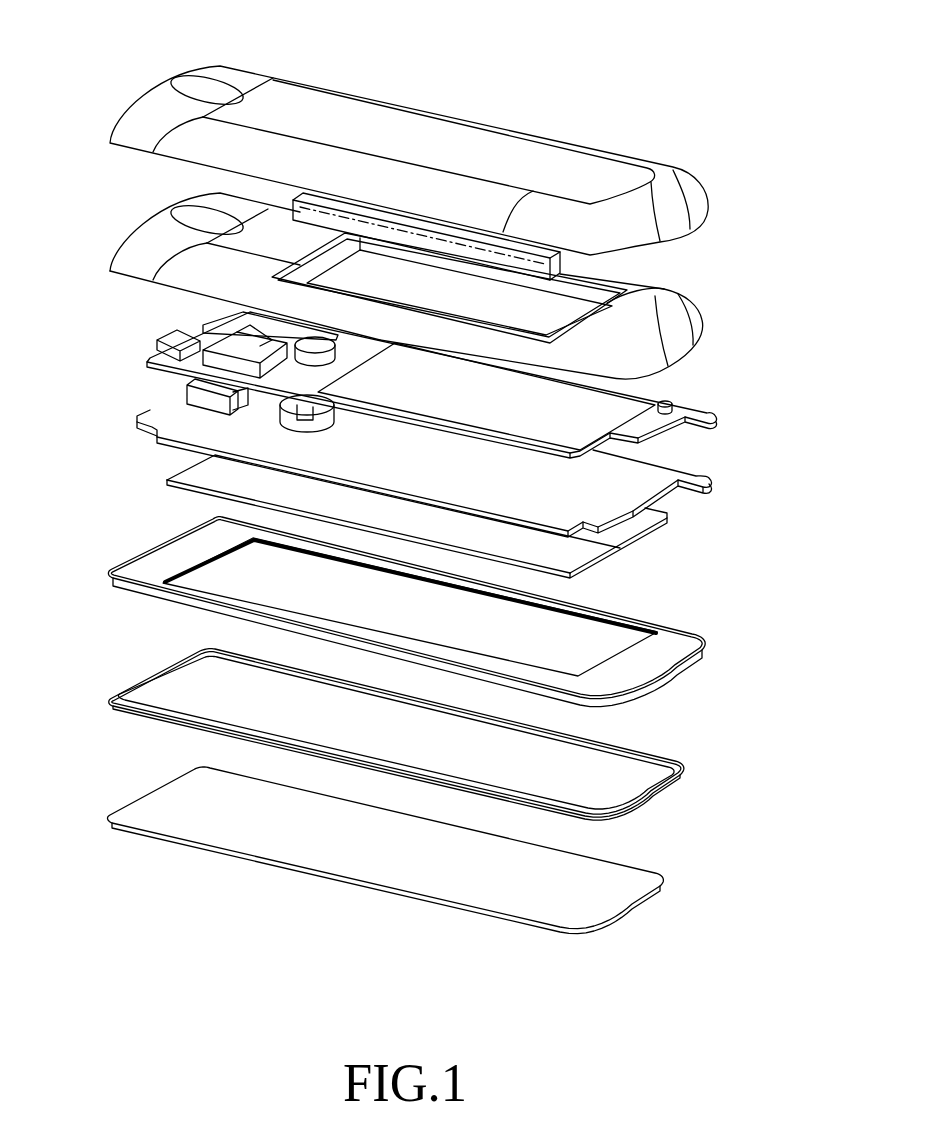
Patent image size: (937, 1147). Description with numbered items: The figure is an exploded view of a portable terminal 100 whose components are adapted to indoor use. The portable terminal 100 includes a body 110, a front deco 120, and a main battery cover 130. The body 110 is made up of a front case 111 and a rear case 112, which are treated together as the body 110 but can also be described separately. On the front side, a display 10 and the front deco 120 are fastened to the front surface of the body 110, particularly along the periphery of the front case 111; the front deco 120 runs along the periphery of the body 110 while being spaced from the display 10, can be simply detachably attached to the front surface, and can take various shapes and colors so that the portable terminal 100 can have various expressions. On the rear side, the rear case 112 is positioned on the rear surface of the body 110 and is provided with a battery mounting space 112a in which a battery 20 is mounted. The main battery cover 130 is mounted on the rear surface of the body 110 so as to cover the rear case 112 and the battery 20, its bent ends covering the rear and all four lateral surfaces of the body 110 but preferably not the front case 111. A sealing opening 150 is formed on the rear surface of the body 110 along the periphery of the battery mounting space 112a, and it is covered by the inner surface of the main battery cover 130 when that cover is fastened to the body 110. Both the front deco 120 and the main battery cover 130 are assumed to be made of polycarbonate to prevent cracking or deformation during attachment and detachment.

The portable terminal 100 is at (121, 54).
The main battery cover 130 is at (681, 174).
The rear case 112 is at (133, 247).
The battery mounting space 112a is at (673, 303).
The battery 20 is at (580, 267).
The sealing opening 150 is at (172, 300).
The body 110 is at (731, 661).
The front case 111 is at (142, 556).
The front deco 120 is at (653, 788).
The display 10 is at (630, 903).